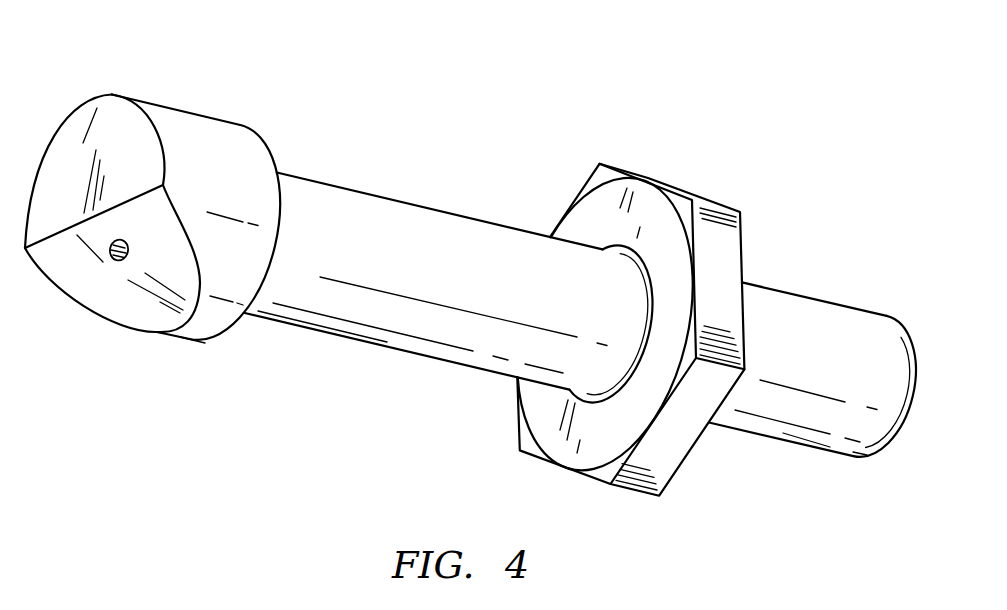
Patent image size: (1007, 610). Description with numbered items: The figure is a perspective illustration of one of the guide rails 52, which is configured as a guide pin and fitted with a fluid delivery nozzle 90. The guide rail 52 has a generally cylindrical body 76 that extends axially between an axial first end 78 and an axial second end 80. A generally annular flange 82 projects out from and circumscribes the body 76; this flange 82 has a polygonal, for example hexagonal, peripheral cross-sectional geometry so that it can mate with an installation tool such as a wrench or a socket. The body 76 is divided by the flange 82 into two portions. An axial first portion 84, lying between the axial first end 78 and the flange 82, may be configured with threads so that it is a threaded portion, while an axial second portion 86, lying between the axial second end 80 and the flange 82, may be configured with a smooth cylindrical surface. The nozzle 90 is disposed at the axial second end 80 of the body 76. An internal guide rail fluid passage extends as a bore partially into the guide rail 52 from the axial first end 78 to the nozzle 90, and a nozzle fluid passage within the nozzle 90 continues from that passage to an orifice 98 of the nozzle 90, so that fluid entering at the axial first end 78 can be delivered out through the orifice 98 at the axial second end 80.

The guide rail 52 is at (474, 281).
The body 76 is at (468, 213).
The axial first end 78 is at (902, 335).
The axial second end 80 is at (72, 128).
The flange 82 is at (688, 190).
The axial first portion 84 is at (785, 465).
The axial second portion 86 is at (398, 368).
The nozzle 90 is at (193, 95).
The orifice 98 is at (116, 262).